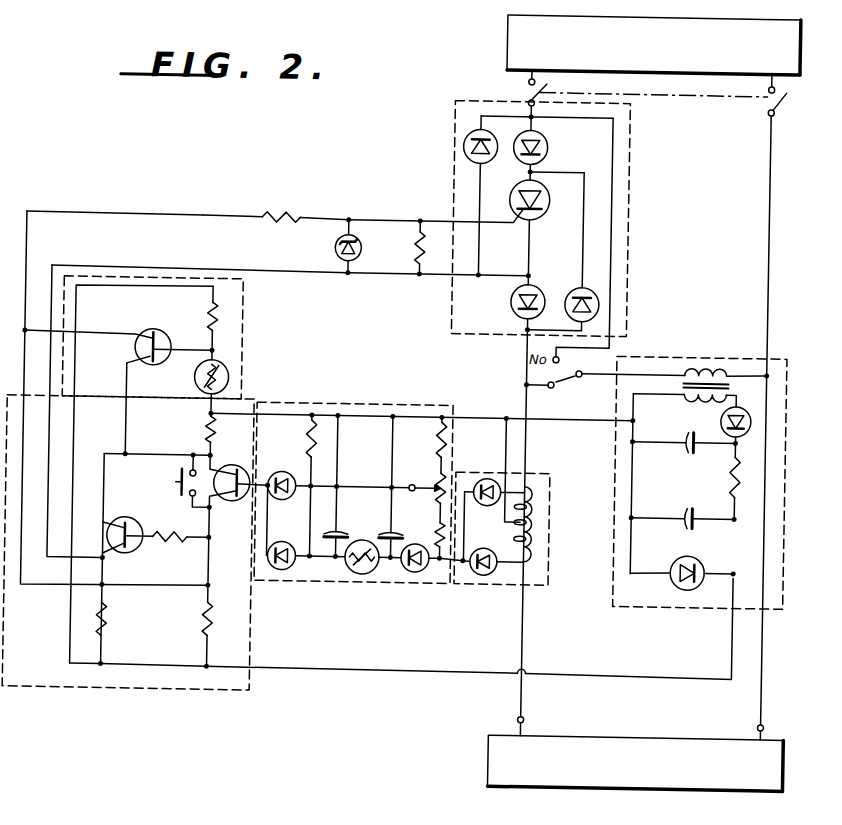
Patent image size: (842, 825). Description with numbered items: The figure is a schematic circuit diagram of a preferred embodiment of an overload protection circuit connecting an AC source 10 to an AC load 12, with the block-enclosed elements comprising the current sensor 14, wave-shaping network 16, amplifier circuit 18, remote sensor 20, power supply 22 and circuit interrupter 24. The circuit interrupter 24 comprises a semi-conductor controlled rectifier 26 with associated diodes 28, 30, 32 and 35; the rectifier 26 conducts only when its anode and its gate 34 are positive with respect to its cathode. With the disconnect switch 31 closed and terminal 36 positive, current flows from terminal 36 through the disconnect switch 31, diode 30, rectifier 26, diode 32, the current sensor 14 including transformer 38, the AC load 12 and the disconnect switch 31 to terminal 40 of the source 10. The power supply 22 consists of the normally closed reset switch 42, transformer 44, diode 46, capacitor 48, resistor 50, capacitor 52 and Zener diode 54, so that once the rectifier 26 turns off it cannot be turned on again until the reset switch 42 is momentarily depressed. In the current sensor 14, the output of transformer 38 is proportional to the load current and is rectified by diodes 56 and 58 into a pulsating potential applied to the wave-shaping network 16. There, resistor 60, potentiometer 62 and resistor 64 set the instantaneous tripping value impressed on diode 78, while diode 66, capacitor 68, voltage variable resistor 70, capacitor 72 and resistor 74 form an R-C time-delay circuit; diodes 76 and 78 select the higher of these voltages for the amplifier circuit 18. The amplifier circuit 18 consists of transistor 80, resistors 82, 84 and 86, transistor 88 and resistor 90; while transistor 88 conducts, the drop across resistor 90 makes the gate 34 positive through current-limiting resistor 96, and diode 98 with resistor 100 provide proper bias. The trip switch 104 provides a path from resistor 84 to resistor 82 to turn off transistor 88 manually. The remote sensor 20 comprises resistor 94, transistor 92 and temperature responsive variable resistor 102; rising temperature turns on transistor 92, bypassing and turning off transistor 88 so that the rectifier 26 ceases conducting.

The AC source 10 is at (498, 34).
The AC load 12 is at (664, 791).
The current sensor 14 is at (553, 556).
The wave-shaping network 16 is at (372, 404).
The amplifier circuit 18 is at (183, 696).
The remote sensor 20 is at (242, 340).
The power supply 22 is at (789, 584).
The circuit interrupter 24 is at (626, 149).
The semi-conductor controlled rectifier 26 is at (532, 218).
The diode 28 is at (482, 164).
The diode 30 is at (545, 143).
The disconnect switch 31 is at (672, 87).
The diode 32 is at (510, 303).
The gate 34 is at (516, 211).
The diode 35 is at (573, 284).
The terminal 36 is at (521, 91).
The transformer 38 is at (535, 506).
The terminal 40 is at (762, 84).
The reset switch 42 is at (582, 376).
The transformer 44 is at (704, 358).
The diode 46 is at (752, 416).
The capacitor 48 is at (686, 454).
The resistor 50 is at (746, 477).
The capacitor 52 is at (678, 530).
The Zener diode 54 is at (674, 582).
The diode 56 is at (489, 477).
The diode 58 is at (478, 577).
The resistor 60 is at (437, 537).
The potentiometer 62 is at (434, 492).
The resistor 64 is at (438, 443).
The diode 66 is at (413, 574).
The capacitor 68 is at (392, 534).
The voltage variable resistor 70 is at (361, 576).
The capacitor 72 is at (345, 529).
The resistor 74 is at (308, 440).
The diode 76 is at (283, 576).
The diode 78 is at (284, 502).
The transistor 80 is at (238, 505).
The resistor 82 is at (207, 436).
The resistor 84 is at (204, 634).
The resistor 86 is at (182, 556).
The transistor 88 is at (137, 527).
The resistor 90 is at (114, 630).
The transistor 92 is at (154, 336).
The resistor 94 is at (206, 306).
The resistor 96 is at (280, 212).
The diode 98 is at (334, 251).
The resistor 100 is at (414, 247).
The temperature responsive variable resistor 102 is at (194, 377).
The trip switch 104 is at (174, 489).